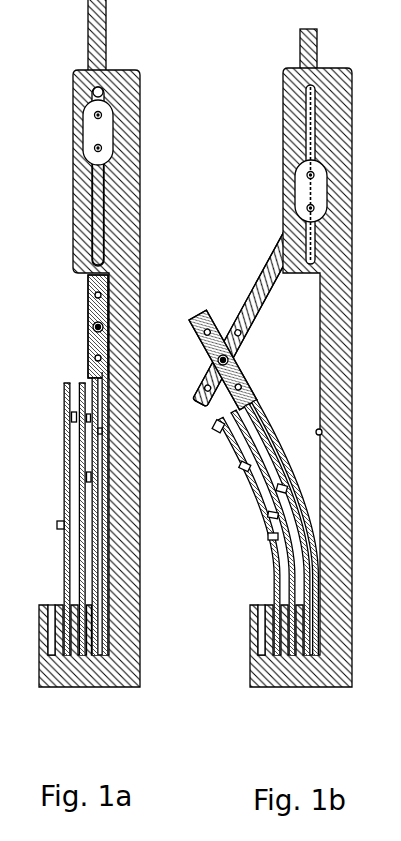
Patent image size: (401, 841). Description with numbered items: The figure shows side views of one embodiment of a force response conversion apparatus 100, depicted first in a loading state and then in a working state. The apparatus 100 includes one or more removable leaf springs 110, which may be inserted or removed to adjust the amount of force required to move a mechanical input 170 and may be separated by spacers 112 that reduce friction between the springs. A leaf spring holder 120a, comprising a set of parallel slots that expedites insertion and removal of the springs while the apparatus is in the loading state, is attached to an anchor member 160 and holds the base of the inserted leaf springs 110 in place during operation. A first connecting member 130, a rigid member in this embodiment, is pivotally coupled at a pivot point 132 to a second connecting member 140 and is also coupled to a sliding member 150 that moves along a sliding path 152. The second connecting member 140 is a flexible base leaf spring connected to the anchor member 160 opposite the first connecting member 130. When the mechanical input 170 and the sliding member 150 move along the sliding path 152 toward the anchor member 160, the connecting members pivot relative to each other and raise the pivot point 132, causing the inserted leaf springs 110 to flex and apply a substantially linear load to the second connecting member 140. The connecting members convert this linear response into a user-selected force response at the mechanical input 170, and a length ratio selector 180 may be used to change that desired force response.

In FIG. 1A, the force response conversion apparatus 100 is at (106, 380).
In FIG. 1B, the force response conversion apparatus 100 is at (284, 394).
In FIG. 1A, the removable leaf springs 110 is at (66, 386).
In FIG. 1B, the removable leaf springs 110 is at (239, 467).
In FIG. 1A, the spacers 112 is at (63, 529).
In FIG. 1B, the spacers 112 is at (268, 540).
In FIG. 1A, the leaf spring holder 120a is at (40, 594).
In FIG. 1B, the leaf spring holder 120a is at (242, 593).
In FIG. 1A, the first connecting member 130 is at (90, 226).
In FIG. 1B, the first connecting member 130 is at (264, 293).
In FIG. 1A, the pivot point 132 is at (92, 327).
In FIG. 1B, the pivot point 132 is at (219, 360).
In FIG. 1A, the second connecting member 140 is at (90, 360).
In FIG. 1B, the second connecting member 140 is at (239, 373).
In FIG. 1A, the sliding member 150 is at (88, 136).
In FIG. 1B, the sliding member 150 is at (300, 200).
In FIG. 1A, the sliding path 152 is at (92, 187).
In FIG. 1B, the sliding path 152 is at (308, 133).
In FIG. 1A, the anchor member 160 is at (118, 628).
In FIG. 1B, the anchor member 160 is at (325, 622).
In FIG. 1A, the mechanical input 170 is at (90, 25).
In FIG. 1B, the mechanical input 170 is at (304, 57).
In FIG. 1A, the length ratio selector 180 is at (58, 297).
In FIG. 1B, the length ratio selector 180 is at (257, 357).